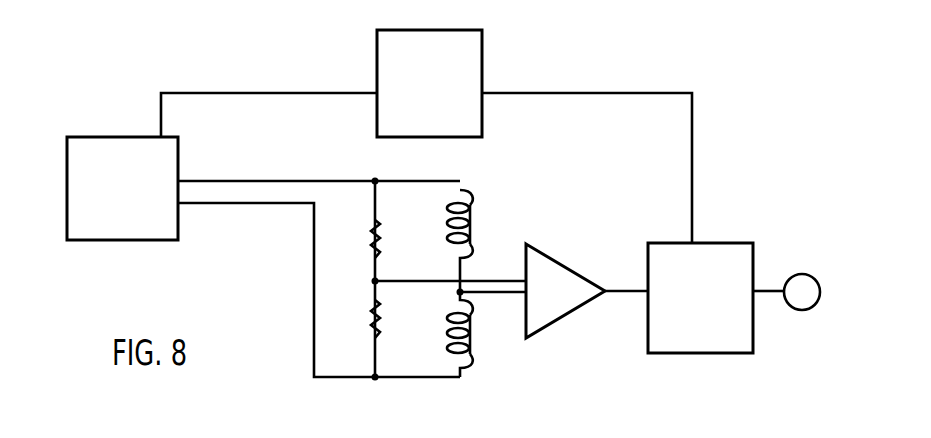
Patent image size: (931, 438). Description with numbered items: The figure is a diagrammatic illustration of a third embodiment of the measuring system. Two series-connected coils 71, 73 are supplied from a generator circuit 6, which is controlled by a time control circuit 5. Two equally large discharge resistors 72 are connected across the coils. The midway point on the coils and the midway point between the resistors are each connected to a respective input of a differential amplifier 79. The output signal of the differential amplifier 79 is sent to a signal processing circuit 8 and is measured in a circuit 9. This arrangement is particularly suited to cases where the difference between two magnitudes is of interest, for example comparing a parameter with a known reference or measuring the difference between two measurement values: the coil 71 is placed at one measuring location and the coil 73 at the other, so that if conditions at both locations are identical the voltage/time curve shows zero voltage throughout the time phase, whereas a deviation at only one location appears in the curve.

The time control circuit 5 is at (482, 50).
The generator circuit 6 is at (140, 242).
The coil 71 is at (474, 214).
The discharge resistors 72 is at (383, 237).
The coil 73 is at (474, 327).
The differential amplifier 79 is at (578, 273).
The signal processing circuit 8 is at (720, 354).
The circuit 9 is at (796, 311).